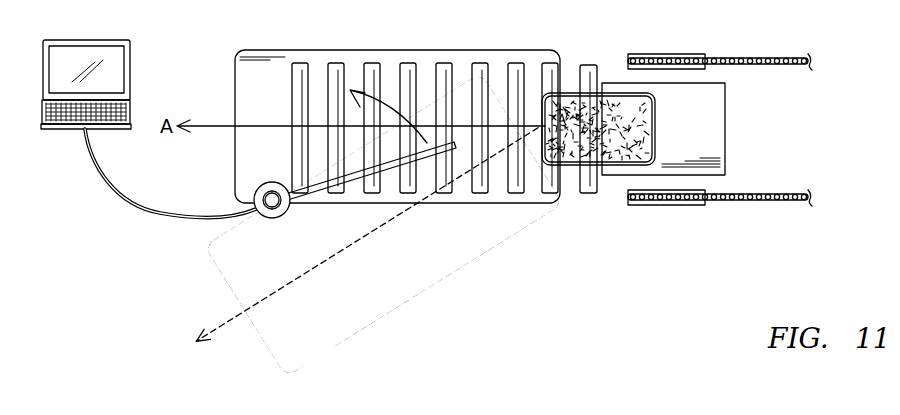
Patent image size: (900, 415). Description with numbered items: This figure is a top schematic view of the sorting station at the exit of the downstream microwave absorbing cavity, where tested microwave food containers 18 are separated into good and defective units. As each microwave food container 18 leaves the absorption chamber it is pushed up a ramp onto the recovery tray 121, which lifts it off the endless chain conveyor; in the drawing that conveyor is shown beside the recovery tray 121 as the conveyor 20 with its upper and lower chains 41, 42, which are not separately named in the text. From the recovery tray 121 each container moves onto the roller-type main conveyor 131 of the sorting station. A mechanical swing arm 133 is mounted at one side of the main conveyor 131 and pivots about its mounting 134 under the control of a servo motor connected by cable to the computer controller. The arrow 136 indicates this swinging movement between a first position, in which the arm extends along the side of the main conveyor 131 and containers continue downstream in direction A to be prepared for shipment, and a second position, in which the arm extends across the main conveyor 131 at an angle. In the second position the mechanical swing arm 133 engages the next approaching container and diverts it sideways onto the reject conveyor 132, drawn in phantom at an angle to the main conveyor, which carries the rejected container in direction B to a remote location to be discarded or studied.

The microwave food container 18 is at (569, 92).
The conveyor 20 is at (669, 54).
The upper conveyor chain 41 is at (768, 55).
The lower conveyor chain 42 is at (767, 205).
The recovery tray 121 is at (726, 130).
The main conveyor 131 is at (322, 49).
The reject conveyor 132 is at (405, 310).
The mechanical swing arm 133 is at (317, 183).
The pivot wheel 134 is at (255, 196).
The arrow 136 is at (388, 110).